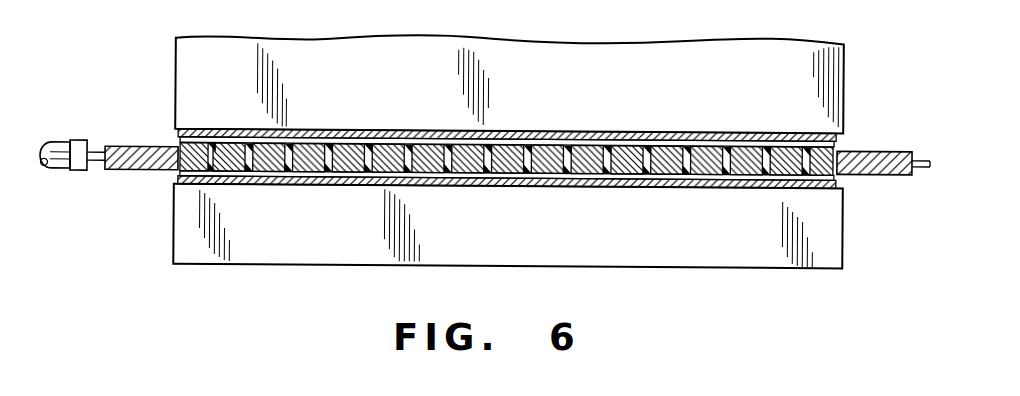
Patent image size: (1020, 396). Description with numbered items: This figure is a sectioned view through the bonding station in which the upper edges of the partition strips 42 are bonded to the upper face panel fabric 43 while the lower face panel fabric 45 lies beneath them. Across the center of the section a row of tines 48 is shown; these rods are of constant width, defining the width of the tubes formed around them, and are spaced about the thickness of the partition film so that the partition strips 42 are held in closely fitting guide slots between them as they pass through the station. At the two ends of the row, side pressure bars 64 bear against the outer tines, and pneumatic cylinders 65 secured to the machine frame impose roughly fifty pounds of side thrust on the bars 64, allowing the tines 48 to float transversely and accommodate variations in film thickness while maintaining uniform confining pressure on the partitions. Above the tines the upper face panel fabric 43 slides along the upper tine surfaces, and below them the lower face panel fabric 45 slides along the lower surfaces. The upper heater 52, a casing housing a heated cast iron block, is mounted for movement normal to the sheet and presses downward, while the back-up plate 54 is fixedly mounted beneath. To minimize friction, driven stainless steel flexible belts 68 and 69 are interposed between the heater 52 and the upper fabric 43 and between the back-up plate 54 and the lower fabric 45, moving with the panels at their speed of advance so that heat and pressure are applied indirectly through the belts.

The partition strips 42 is at (277, 176).
The upper face panel fabric 43 is at (400, 137).
The lower face panel fabric 45 is at (350, 187).
The tines 48 is at (187, 140).
The upper heater 52 is at (552, 83).
The back-up plate 54 is at (528, 247).
The side pressure bars 64 is at (135, 150).
The pneumatic cylinders 65 is at (58, 148).
The upper flexible belt 68 is at (312, 137).
The lower flexible belt 69 is at (425, 180).